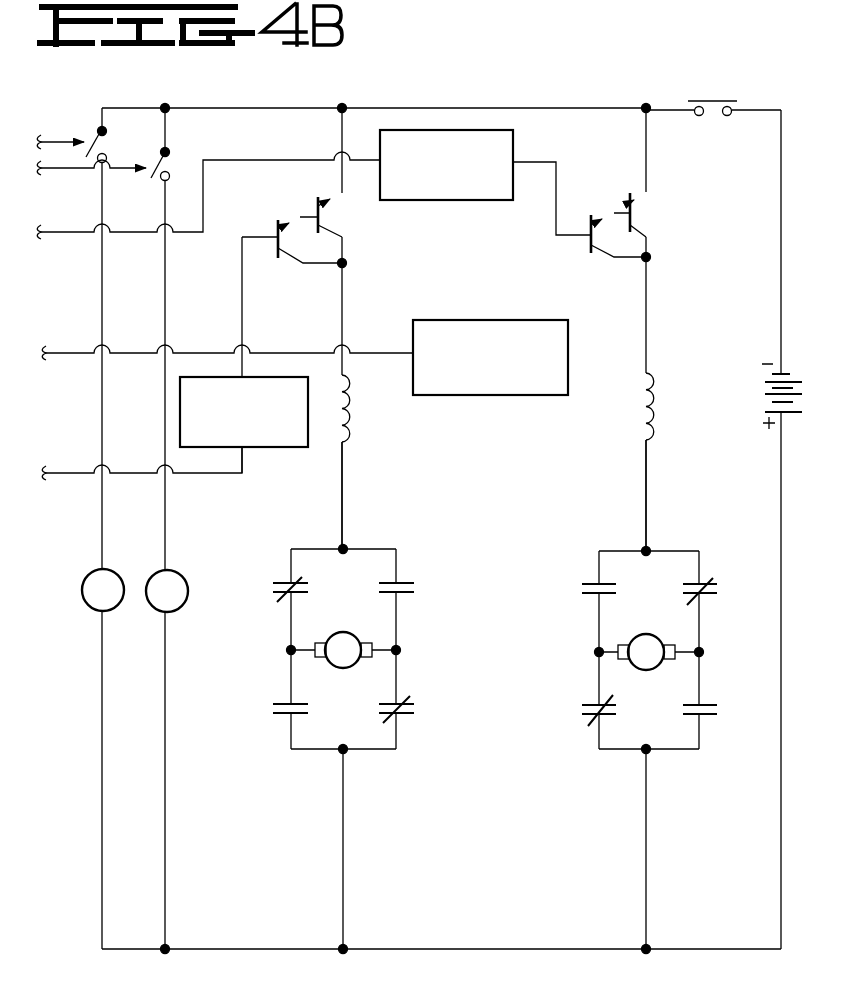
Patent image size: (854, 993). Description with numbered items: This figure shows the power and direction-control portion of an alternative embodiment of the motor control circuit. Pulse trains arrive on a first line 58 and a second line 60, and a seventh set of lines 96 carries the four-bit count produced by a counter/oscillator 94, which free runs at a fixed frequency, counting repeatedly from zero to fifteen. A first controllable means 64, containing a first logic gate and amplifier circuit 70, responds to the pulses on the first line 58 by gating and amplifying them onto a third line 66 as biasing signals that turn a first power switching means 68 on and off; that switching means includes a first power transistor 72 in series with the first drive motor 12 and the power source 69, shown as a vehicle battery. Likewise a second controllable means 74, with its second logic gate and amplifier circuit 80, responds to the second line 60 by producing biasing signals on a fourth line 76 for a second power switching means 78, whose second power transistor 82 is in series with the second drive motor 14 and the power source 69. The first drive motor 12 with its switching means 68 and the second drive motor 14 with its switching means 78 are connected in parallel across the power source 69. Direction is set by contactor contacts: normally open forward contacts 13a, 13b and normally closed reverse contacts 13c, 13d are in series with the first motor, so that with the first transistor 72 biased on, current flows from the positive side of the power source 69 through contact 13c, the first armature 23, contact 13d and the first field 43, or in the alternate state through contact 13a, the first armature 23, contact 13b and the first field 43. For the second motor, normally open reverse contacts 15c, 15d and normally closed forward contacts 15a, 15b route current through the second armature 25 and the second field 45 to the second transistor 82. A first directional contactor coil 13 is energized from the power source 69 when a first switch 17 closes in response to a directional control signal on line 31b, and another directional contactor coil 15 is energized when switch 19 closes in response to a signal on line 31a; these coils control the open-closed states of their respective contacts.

The first drive motor 12 is at (634, 488).
The first directional contactor coil 13 is at (153, 576).
The forward contact 13a is at (710, 700).
The forward contact 13b is at (582, 585).
The reverse contact 13c is at (583, 703).
The reverse contact 13d is at (710, 582).
The second drive motor 14 is at (365, 497).
The directional contactor coil 15 is at (90, 572).
The forward contact 15a is at (410, 700).
The forward contact 15b is at (277, 579).
The reverse contact 15c is at (278, 700).
The reverse contact 15d is at (412, 580).
The first switch 17 is at (172, 161).
The switch 19 is at (114, 143).
The first armature 23 is at (650, 633).
The second armature 25 is at (348, 632).
The line 31a is at (44, 138).
The line 31b is at (78, 170).
The first field 43 is at (661, 387).
The second field 45 is at (354, 423).
The first line 58 is at (64, 232).
The second line 60 is at (78, 475).
The first controllable means 64 is at (524, 151).
The third line 66 is at (557, 181).
The first power switching means 68 is at (604, 265).
The power source 69 is at (757, 410).
The first logic gate and amplifier circuit 70 is at (486, 202).
The first power transistor 72 is at (630, 191).
The second controllable means 74 is at (255, 458).
The fourth line 76 is at (243, 362).
The second power switching means 78 is at (298, 266).
The second logic gate and amplifier circuit 80 is at (282, 448).
The second power transistor 82 is at (322, 192).
The counter/oscillator 94 is at (480, 320).
The seventh set of lines 96 is at (67, 353).